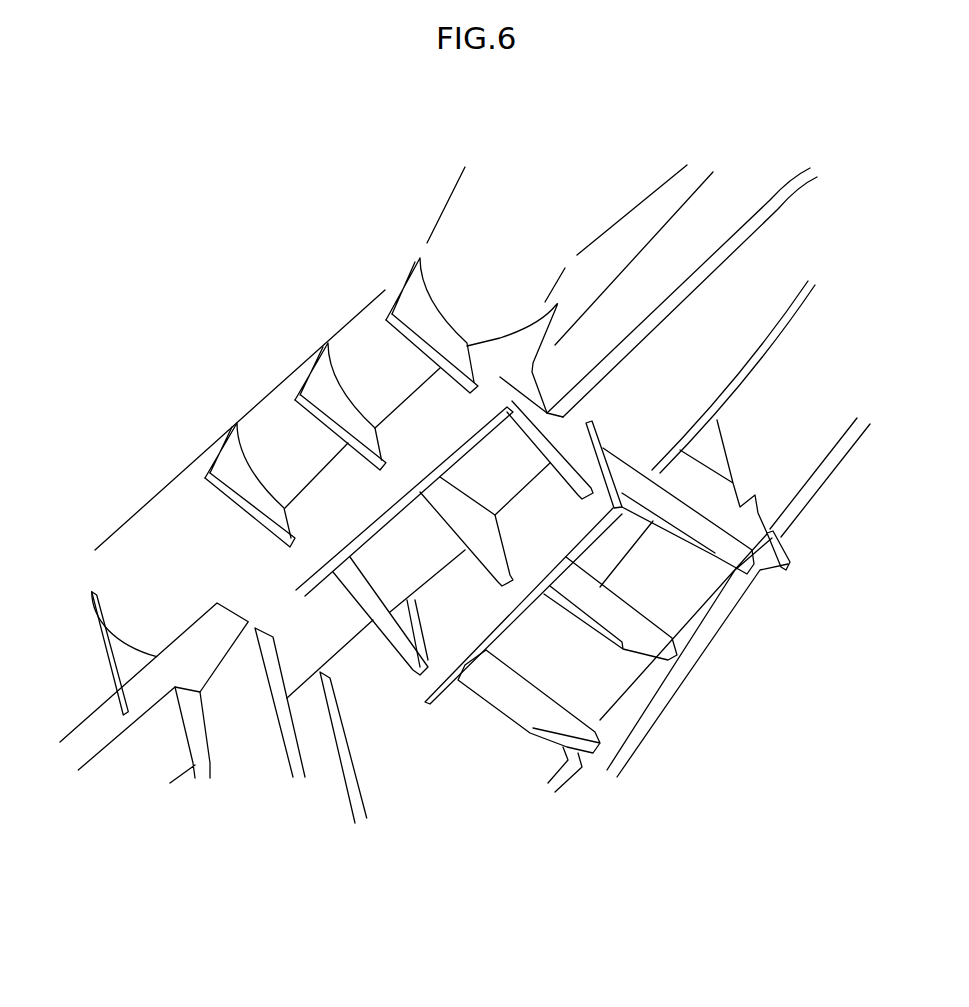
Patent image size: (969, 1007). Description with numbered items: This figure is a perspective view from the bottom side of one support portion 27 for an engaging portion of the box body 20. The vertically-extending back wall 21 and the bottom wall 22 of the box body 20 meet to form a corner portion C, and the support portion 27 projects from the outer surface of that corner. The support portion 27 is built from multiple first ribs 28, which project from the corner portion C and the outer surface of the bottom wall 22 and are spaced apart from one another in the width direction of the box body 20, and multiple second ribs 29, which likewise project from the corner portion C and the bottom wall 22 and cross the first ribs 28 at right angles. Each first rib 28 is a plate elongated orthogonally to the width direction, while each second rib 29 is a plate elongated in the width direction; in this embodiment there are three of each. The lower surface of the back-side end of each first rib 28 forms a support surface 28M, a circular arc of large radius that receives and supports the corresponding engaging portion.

The box body 20 is at (482, 458).
The back wall 21 is at (255, 274).
The bottom wall 22 is at (605, 673).
The support portion 27 is at (436, 752).
The first rib 28 is at (441, 378).
The support surface 28M is at (443, 353).
The second rib 29 is at (333, 530).
The corner portion C is at (123, 455).